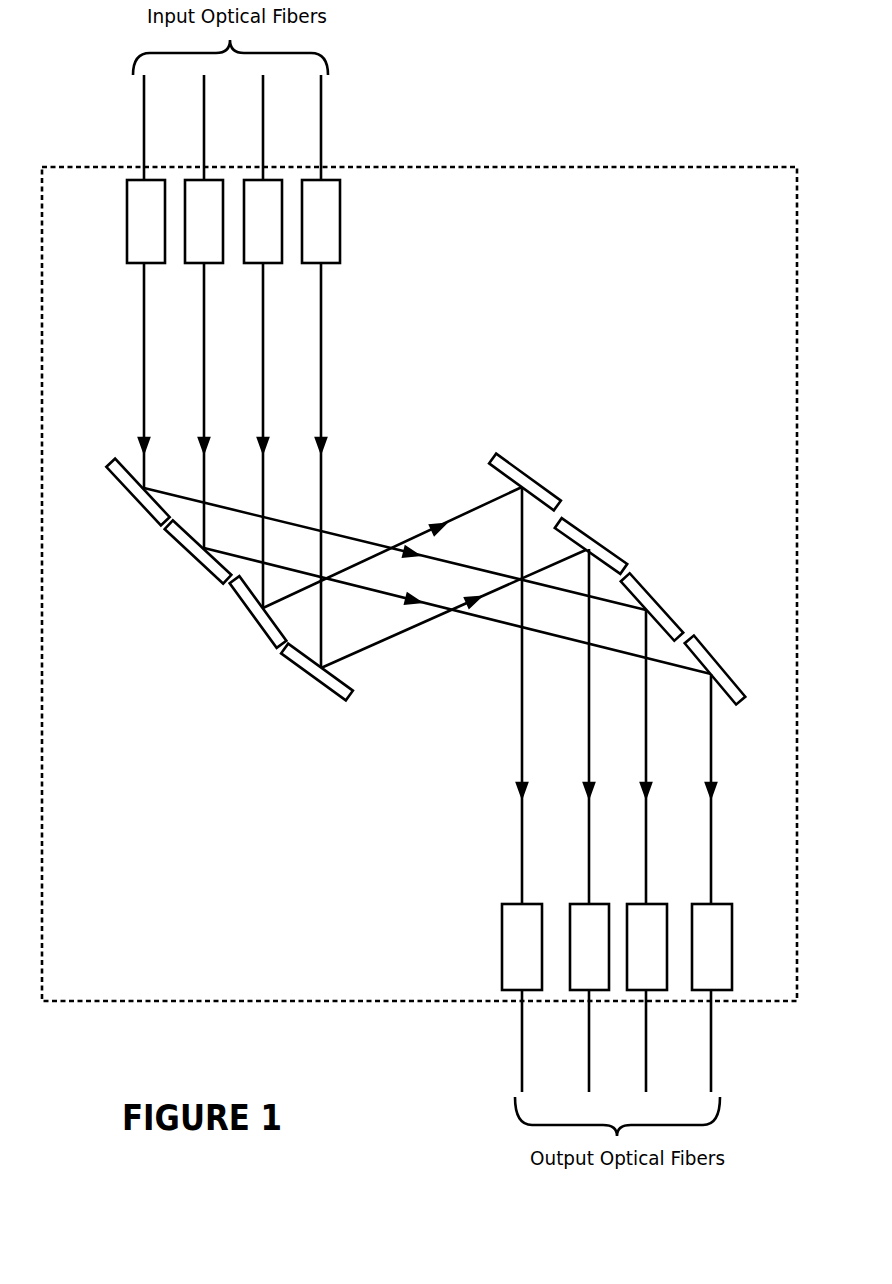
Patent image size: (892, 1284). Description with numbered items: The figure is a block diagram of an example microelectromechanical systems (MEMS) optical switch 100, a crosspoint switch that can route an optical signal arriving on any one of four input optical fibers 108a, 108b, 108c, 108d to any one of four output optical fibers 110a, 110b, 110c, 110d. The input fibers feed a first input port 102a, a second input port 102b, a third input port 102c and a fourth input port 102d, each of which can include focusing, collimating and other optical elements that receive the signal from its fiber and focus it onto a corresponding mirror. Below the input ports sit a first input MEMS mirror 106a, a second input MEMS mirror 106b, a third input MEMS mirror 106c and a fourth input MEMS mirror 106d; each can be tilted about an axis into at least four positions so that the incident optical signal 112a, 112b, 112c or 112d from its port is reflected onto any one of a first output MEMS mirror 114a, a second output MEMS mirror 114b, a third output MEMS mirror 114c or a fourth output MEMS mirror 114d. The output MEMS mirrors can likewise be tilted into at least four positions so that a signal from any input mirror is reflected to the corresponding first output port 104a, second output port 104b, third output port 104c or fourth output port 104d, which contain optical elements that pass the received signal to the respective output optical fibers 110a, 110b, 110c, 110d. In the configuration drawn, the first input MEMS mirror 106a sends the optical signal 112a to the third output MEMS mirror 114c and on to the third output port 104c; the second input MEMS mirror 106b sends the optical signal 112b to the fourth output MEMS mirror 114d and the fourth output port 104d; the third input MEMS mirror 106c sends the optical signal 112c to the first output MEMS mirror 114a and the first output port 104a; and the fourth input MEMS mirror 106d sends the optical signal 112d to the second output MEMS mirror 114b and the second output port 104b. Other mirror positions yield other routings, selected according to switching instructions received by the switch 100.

The MEMS optical switch 100 is at (797, 449).
The first input port 102a is at (132, 179).
The second input port 102b is at (192, 179).
The third input port 102c is at (251, 179).
The fourth input port 102d is at (309, 179).
The first output port 104a is at (511, 991).
The second output port 104b is at (578, 991).
The third output port 104c is at (635, 991).
The fourth output port 104d is at (700, 991).
The first input MEMS mirror 106a is at (116, 503).
The second input MEMS mirror 106b is at (172, 567).
The third input MEMS mirror 106c is at (232, 623).
The fourth input MEMS mirror 106d is at (297, 690).
The first input optical fiber 108a is at (143, 118).
The second input optical fiber 108b is at (203, 118).
The third input optical fiber 108c is at (262, 118).
The fourth input optical fiber 108d is at (320, 118).
The first output optical fiber 110a is at (521, 1053).
The second output optical fiber 110b is at (588, 1053).
The third output optical fiber 110c is at (645, 1053).
The fourth output optical fiber 110d is at (710, 1053).
The optical signal 112a is at (143, 365).
The optical signal 112b is at (203, 365).
The optical signal 112c is at (262, 365).
The optical signal 112d is at (320, 365).
The first output MEMS mirror 114a is at (554, 468).
The second output MEMS mirror 114b is at (620, 533).
The third output MEMS mirror 114c is at (686, 598).
The fourth output MEMS mirror 114d is at (750, 663).